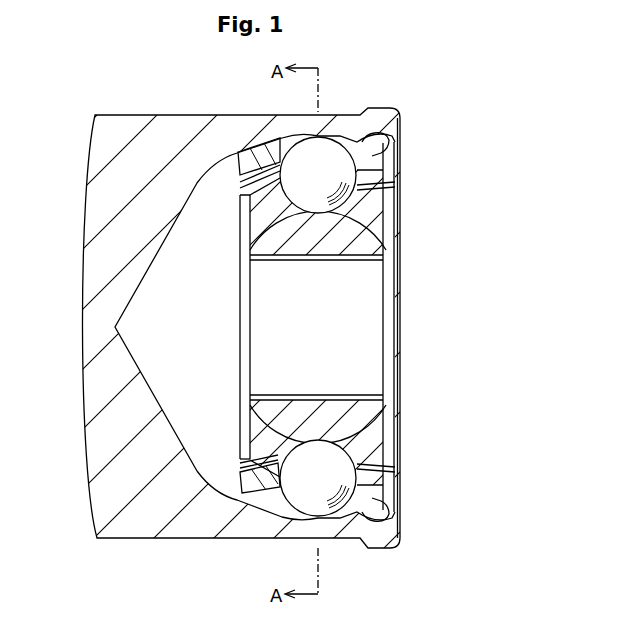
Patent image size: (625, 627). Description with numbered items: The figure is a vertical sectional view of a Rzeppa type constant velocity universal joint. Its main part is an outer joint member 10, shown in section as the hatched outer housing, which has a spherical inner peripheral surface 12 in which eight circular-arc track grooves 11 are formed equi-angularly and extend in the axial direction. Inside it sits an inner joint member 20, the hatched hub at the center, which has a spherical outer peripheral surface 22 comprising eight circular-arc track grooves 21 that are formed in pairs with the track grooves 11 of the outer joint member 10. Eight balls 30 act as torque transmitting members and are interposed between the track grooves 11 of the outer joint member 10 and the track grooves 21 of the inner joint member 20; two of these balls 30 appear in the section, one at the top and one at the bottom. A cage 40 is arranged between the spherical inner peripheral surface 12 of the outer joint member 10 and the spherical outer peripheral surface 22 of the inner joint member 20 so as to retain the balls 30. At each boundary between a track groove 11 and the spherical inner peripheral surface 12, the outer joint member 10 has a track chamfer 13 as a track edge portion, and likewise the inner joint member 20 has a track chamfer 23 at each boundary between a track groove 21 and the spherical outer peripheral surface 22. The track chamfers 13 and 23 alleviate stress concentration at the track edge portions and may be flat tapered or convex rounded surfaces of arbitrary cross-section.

The outer joint member 10 is at (386, 106).
The track grooves 11 is at (386, 157).
The spherical inner peripheral surface 12 is at (293, 478).
The track chamfer 13 is at (262, 162).
The inner joint member 20 is at (390, 421).
The track grooves 21 is at (385, 236).
The spherical outer peripheral surface 22 is at (257, 470).
The track chamfer 23 is at (374, 192).
The balls 30 is at (345, 140).
The cage 40 is at (230, 189).